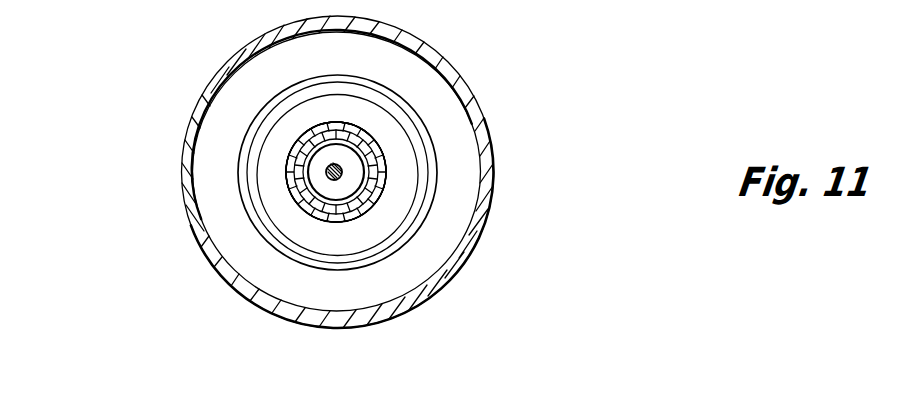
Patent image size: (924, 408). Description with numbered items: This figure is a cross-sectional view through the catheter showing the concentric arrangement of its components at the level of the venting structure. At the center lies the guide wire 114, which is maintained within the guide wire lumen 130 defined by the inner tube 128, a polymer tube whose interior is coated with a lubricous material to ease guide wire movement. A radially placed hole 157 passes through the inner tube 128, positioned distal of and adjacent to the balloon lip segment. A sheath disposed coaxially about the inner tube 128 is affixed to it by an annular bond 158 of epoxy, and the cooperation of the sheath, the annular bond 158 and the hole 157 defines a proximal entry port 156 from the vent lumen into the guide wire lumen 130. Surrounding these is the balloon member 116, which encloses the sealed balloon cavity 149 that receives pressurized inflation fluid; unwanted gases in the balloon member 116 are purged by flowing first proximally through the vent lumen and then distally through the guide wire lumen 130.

The guide wire 114 is at (342, 172).
The balloon member 116 is at (478, 127).
The inner tube 128 is at (312, 178).
The guide wire lumen 130 is at (323, 150).
The balloon cavity 149 is at (458, 180).
The proximal entry port 156 is at (372, 202).
The radially placed hole 157 is at (338, 130).
The annular bond 158 is at (307, 200).